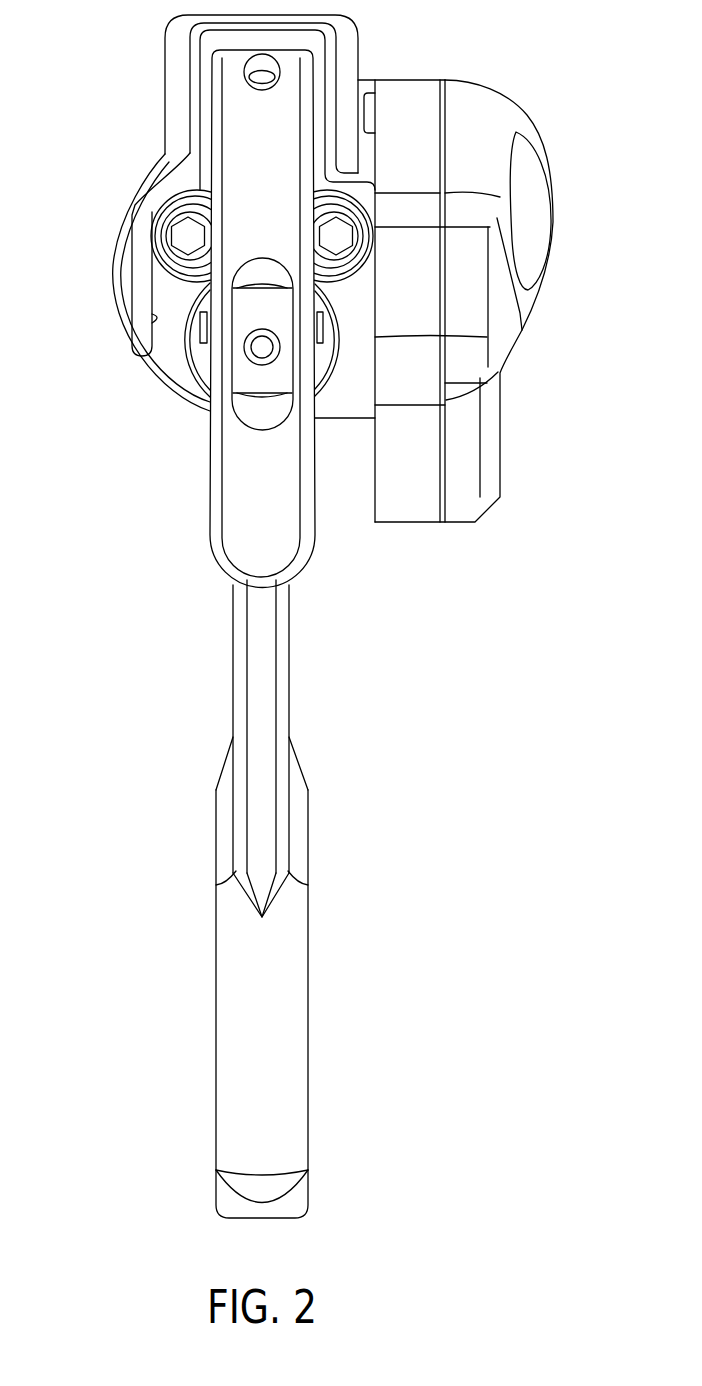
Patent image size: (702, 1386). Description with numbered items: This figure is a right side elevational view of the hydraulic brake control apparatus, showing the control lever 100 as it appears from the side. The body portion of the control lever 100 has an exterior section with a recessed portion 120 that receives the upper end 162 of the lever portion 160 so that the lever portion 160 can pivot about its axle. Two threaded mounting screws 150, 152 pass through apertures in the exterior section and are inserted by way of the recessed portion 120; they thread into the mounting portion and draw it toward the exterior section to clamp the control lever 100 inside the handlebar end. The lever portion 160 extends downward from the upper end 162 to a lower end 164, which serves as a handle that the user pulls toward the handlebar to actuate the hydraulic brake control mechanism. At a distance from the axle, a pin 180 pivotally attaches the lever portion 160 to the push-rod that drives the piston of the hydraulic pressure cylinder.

The control lever 100 is at (93, 432).
The recessed portion 120 is at (158, 318).
The mounting screw 150 is at (174, 230).
The mounting screw 152 is at (345, 212).
The lever portion 160 is at (234, 682).
The upper end 162 is at (211, 85).
The lower end 164 is at (216, 1127).
The pin 180 is at (232, 365).